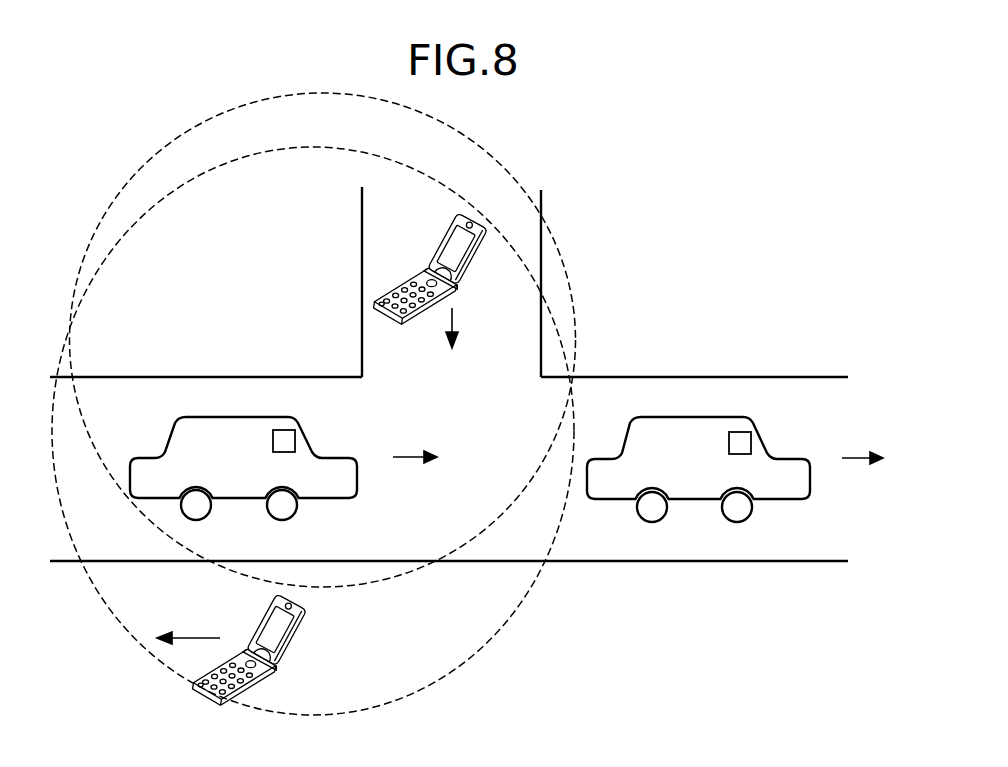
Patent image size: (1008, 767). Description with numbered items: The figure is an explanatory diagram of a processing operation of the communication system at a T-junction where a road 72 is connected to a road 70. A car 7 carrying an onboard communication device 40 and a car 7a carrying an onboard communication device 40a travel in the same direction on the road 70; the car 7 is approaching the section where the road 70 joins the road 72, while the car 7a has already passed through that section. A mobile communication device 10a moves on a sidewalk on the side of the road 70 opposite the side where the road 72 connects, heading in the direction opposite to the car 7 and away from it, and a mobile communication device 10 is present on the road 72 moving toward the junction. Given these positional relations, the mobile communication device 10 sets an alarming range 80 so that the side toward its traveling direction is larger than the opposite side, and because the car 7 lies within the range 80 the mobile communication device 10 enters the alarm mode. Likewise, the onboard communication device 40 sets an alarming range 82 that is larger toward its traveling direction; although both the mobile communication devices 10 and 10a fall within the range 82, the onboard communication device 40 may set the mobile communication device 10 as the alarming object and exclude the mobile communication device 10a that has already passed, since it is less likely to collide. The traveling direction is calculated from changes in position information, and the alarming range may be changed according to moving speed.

The car 7 is at (265, 468).
The car 7a is at (726, 469).
The mobile communication device 10 is at (441, 240).
The mobile communication device 10a is at (262, 634).
The onboard communication device 40 is at (273, 439).
The onboard communication device 40a is at (729, 439).
The road 70 is at (667, 377).
The road 72 is at (542, 242).
The alarming range 80 is at (570, 287).
The alarming range 82 is at (502, 617).